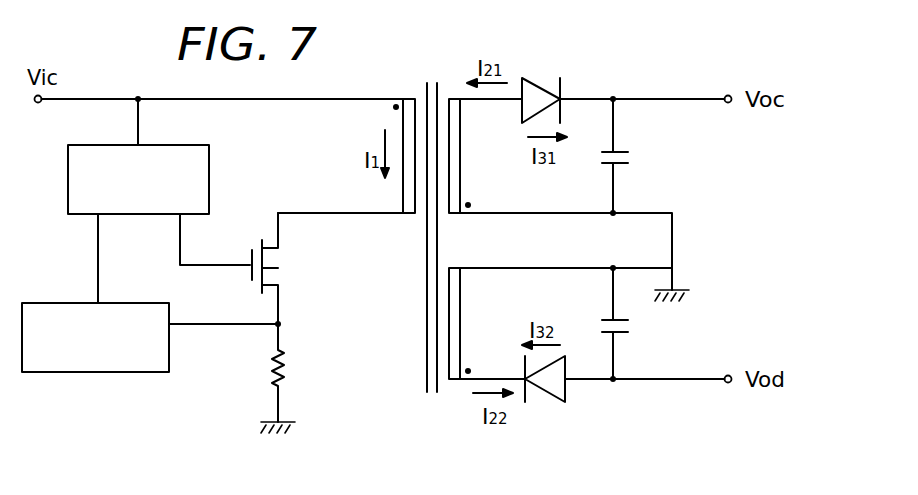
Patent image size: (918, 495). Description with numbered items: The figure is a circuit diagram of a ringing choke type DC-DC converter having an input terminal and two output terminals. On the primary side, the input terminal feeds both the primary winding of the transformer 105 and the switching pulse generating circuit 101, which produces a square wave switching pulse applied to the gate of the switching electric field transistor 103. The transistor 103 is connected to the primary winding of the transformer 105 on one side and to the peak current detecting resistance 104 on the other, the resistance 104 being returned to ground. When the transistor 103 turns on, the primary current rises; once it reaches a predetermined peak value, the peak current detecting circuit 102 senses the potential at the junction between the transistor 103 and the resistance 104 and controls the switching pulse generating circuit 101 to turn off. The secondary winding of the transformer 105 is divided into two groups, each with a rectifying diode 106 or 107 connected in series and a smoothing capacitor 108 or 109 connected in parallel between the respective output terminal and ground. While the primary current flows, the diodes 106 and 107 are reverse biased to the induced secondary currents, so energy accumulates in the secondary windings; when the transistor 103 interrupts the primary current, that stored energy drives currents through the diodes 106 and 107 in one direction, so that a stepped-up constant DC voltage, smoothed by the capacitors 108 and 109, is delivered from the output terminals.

The switching pulse generating circuit 101 is at (209, 167).
The peak current detecting circuit 102 is at (116, 373).
The switching electric field transistor 103 is at (281, 270).
The peak current detecting resistance 104 is at (271, 378).
The transformer 105 is at (416, 227).
The rectifying diode 106 is at (543, 94).
The rectifying diode 107 is at (562, 388).
The smoothing capacitor 108 is at (636, 157).
The smoothing capacitor 109 is at (636, 327).